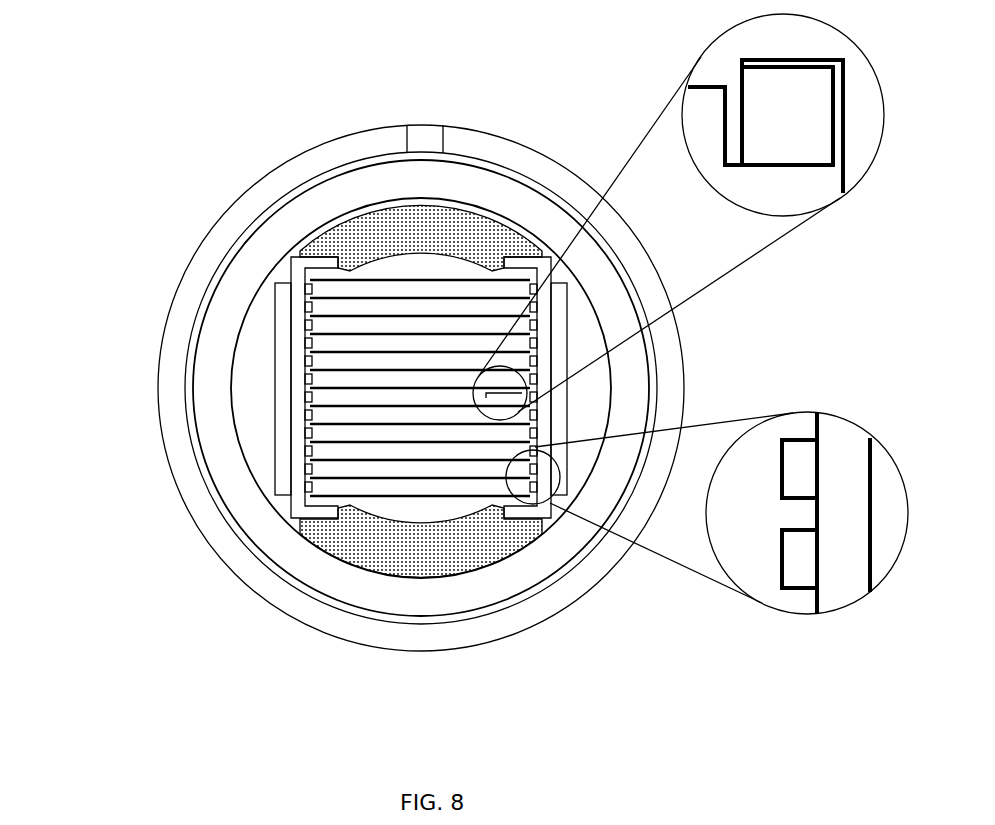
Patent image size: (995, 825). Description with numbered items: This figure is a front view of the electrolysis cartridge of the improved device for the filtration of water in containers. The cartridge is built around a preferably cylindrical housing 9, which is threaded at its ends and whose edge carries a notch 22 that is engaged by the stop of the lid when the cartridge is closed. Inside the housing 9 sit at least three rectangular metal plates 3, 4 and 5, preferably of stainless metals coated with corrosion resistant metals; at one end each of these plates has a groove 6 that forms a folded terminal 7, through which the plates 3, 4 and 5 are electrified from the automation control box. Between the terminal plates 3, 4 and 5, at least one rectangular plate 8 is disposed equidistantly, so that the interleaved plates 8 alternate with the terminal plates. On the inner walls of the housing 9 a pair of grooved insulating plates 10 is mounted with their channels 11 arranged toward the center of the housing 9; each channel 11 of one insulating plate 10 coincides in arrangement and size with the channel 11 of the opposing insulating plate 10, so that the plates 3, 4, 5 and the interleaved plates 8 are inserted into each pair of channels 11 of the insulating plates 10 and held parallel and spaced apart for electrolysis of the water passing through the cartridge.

The rectangular metal plate 3 is at (380, 278).
The rectangular metal plate 4 is at (352, 389).
The rectangular metal plate 5 is at (412, 500).
The groove 6 is at (735, 125).
The folded terminal 7 is at (787, 90).
The rectangular plate 8 is at (337, 351).
The housing 9 is at (188, 510).
The grooved insulating plate 10 is at (303, 492).
The channel 11 is at (798, 517).
The notch 22 is at (428, 140).